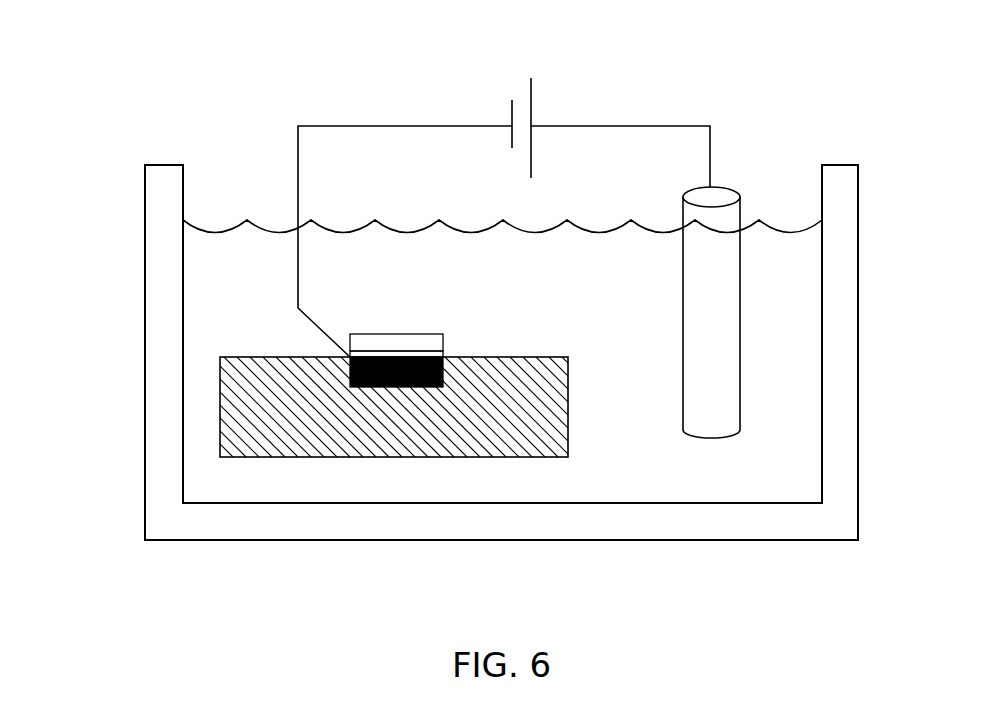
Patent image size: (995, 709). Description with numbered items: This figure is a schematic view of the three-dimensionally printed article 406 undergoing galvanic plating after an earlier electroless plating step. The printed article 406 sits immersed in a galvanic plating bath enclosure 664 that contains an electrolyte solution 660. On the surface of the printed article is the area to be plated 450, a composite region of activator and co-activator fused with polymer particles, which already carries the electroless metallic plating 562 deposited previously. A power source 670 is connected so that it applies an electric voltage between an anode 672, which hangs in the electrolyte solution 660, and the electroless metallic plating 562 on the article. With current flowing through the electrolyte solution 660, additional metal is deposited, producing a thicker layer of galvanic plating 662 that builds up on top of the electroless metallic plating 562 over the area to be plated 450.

The 3D printed article 406 is at (312, 437).
The area to be plated 450 is at (443, 376).
The electroless metallic plating 562 is at (437, 356).
The electrolyte solution 660 is at (212, 314).
The galvanic plating 662 is at (373, 341).
The galvanic plating bath enclosure 664 is at (162, 210).
The power source 670 is at (510, 112).
The anode 672 is at (690, 350).